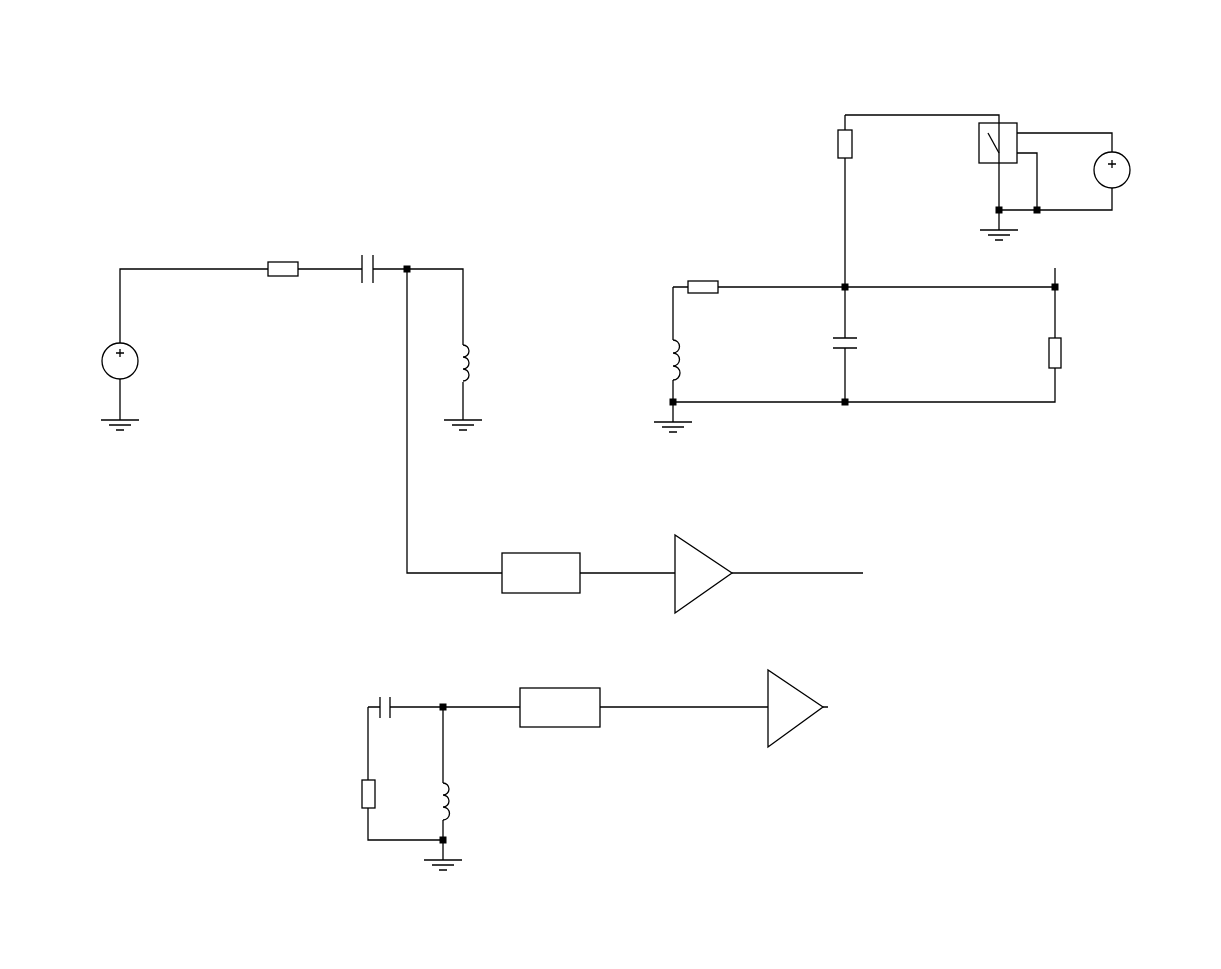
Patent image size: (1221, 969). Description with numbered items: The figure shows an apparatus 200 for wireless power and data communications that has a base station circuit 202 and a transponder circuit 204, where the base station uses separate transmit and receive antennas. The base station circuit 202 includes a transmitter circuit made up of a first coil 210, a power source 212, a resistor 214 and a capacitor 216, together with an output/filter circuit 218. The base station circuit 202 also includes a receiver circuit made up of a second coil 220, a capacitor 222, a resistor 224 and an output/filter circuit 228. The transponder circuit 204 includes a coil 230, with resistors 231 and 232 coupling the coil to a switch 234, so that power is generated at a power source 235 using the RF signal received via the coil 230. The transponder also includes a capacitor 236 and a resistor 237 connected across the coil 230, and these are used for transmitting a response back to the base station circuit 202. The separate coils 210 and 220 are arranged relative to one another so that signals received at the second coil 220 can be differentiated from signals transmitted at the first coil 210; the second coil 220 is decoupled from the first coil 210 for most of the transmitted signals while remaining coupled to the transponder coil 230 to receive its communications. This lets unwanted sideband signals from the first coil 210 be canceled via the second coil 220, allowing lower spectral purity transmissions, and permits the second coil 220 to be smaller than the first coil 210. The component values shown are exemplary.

The apparatus 200 is at (1128, 37).
The base station circuit 202 is at (498, 185).
The transponder circuit 204 is at (1058, 98).
The first coil 210 is at (465, 332).
The power source 212 is at (134, 352).
The resistor 214 is at (298, 260).
The capacitor 216 is at (376, 258).
The output/filter circuit 218 is at (684, 477).
The second coil 220 is at (448, 775).
The capacitor 222 is at (378, 700).
The resistor 224 is at (363, 780).
The output/filter circuit 228 is at (776, 781).
The coil 230 is at (672, 340).
The resistor 231 is at (721, 282).
The resistor 232 is at (841, 130).
The switch 234 is at (1000, 123).
The power source 235 is at (1122, 155).
The capacitor 236 is at (836, 337).
The resistor 237 is at (1051, 338).